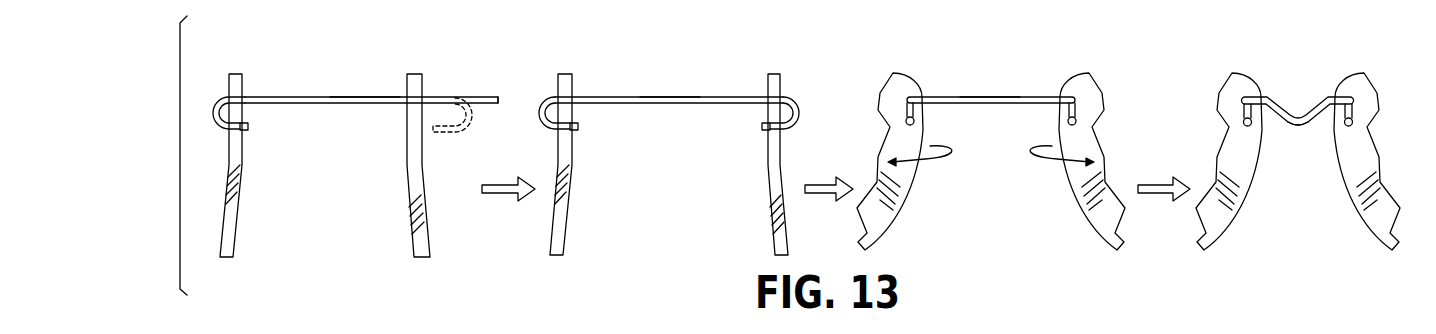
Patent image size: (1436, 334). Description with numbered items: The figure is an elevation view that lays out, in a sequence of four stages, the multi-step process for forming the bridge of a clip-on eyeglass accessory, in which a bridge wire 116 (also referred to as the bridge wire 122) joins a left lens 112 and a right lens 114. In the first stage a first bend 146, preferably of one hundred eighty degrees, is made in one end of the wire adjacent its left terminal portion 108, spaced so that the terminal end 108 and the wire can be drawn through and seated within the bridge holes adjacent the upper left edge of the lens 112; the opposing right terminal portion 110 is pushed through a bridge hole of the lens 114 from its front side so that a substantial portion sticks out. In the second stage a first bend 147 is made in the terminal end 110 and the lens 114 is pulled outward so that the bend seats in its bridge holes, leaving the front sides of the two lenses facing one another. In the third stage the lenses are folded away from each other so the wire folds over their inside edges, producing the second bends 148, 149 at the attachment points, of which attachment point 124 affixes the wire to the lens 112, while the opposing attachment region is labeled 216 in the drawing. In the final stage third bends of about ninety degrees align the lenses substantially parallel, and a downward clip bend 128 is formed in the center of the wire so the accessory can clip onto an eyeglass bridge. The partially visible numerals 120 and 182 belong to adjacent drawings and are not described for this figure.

The left terminal portion 108 is at (250, 126).
The right terminal portion 110 is at (498, 97).
The lens 112 is at (242, 193).
The lens 114 is at (408, 195).
The bridge wire 116 is at (313, 88).
The bridge wire 122 is at (358, 107).
The attachment point 124 is at (920, 80).
The downward clip bend 128 is at (1295, 125).
The first bridge wire bend 146 is at (213, 110).
The first bend 147 is at (470, 113).
The second bridge wire bend 148 is at (1262, 95).
The second bend 149 is at (1335, 95).
The second arm body 216 is at (1060, 80).
The fragment 120 is at (770, 4).
The fragment 182 is at (870, 9).